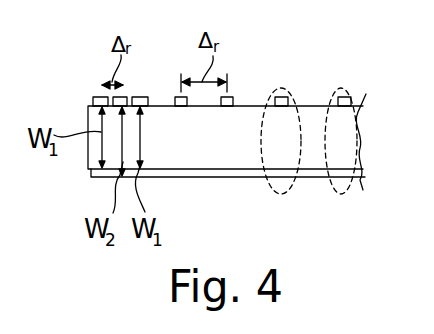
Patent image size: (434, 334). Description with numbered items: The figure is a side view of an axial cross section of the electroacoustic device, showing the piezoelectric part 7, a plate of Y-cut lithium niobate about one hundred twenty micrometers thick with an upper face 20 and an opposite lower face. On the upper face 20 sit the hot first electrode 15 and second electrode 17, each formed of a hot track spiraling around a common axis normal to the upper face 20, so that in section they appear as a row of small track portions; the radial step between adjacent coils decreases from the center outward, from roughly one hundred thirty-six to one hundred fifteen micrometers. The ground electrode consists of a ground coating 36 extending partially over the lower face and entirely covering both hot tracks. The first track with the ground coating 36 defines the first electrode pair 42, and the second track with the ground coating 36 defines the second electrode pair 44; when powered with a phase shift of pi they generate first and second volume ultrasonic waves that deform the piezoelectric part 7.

The piezoelectric part 7 is at (244, 118).
The first hot electrode 15 is at (100, 97).
The second hot electrode 17 is at (126, 97).
The upper face 20 is at (312, 106).
The ground coating 36 is at (200, 174).
The first electrode pair 42 is at (331, 188).
The second electrode pair 44 is at (271, 188).